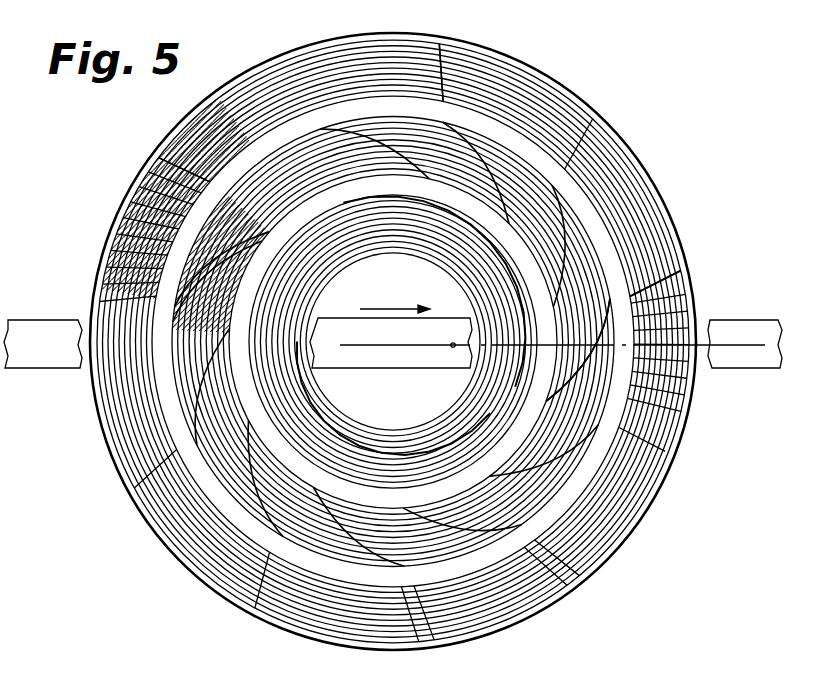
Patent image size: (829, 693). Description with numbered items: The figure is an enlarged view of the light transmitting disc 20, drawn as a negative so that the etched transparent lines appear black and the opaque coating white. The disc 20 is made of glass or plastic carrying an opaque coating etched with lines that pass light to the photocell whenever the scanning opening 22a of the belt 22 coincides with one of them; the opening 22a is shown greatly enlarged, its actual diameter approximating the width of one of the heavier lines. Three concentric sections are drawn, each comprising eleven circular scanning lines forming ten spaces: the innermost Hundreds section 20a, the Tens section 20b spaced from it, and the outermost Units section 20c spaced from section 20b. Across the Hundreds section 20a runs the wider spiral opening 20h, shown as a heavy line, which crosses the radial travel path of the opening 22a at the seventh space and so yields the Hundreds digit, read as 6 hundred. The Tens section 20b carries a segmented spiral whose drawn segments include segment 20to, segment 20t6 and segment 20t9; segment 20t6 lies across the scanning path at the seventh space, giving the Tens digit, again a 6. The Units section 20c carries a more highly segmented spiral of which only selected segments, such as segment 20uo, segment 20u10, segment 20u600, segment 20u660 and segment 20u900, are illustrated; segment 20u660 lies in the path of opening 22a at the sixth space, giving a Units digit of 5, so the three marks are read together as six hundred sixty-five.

The light transmitting disc 20 is at (105, 448).
The Hundreds section 20a is at (352, 203).
The Tens section 20b is at (320, 120).
The Units section 20c is at (299, 54).
The spiral opening 20h is at (345, 207).
The spiral segment 20t6 is at (566, 383).
The spiral segment 20t9 is at (340, 133).
The spiral segment 20to is at (223, 248).
The spiral segment 20u10 is at (152, 173).
The spiral segment 20u600 is at (656, 440).
The spiral segment 20u660 is at (683, 335).
The spiral segment 20u900 is at (452, 72).
The spiral segment 20uo is at (172, 168).
The belt 22 is at (352, 369).
The scanning opening 22a is at (452, 349).
The radial reference line 5 is at (665, 347).
The spoke reference point 6 is at (520, 345).